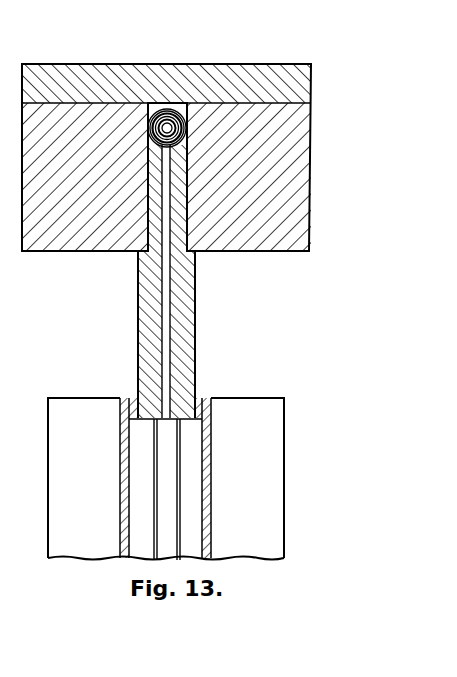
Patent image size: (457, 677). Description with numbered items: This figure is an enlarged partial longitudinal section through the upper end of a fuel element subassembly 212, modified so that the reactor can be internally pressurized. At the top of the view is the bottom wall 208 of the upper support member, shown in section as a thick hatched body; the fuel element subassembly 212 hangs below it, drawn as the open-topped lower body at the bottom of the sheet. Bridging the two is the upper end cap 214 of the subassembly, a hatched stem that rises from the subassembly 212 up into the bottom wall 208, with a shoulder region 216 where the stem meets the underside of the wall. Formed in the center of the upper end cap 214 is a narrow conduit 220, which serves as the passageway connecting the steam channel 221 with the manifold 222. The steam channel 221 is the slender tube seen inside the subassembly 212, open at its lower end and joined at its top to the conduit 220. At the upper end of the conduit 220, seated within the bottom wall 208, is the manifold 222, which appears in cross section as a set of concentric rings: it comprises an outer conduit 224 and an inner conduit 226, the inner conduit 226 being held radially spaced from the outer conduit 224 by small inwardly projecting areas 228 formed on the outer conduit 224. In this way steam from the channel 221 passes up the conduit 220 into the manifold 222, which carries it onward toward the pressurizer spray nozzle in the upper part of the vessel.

The bottom wall 208 is at (297, 179).
The fuel element subassembly 212 is at (328, 449).
The upper end cap 214 is at (188, 329).
The shoulder 216 is at (188, 222).
The conduit 220 is at (163, 353).
The steam channel 221 is at (170, 437).
The manifold 222 is at (160, 109).
The outer conduit 224 is at (181, 111).
The inner conduit 226 is at (204, 112).
The inwardly projecting areas 228 is at (165, 118).